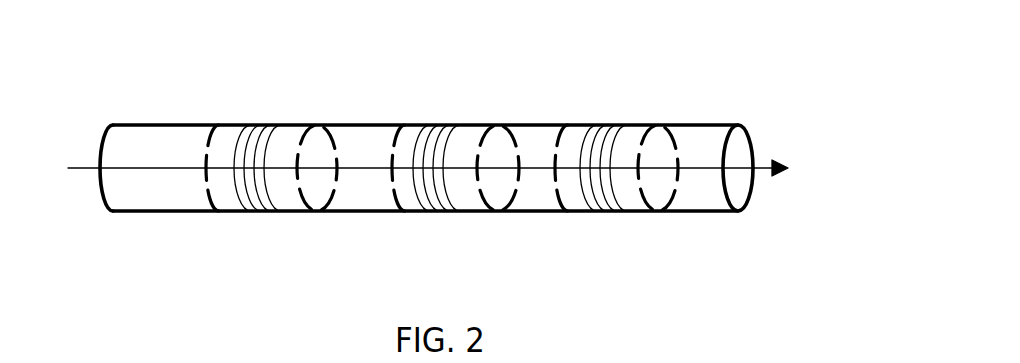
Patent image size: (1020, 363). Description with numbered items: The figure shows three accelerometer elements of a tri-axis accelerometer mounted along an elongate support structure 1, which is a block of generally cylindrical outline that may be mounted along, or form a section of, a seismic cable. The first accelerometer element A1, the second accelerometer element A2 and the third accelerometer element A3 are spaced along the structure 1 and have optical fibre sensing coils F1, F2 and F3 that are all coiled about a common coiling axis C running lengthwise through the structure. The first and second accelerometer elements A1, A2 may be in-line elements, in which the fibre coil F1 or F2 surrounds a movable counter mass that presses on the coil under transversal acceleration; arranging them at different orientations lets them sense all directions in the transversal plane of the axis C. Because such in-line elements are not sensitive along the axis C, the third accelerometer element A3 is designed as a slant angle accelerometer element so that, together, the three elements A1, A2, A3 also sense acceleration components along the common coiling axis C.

The elongate support structure 1 is at (197, 124).
The first accelerometer element A1 is at (285, 125).
The second accelerometer element A2 is at (457, 125).
The third accelerometer element A3 is at (637, 125).
The optical fibre sensing coil F1 is at (285, 218).
The optical fibre sensing coil F2 is at (468, 218).
The optical fibre sensing coil F3 is at (640, 218).
The common coiling axis C is at (428, 183).